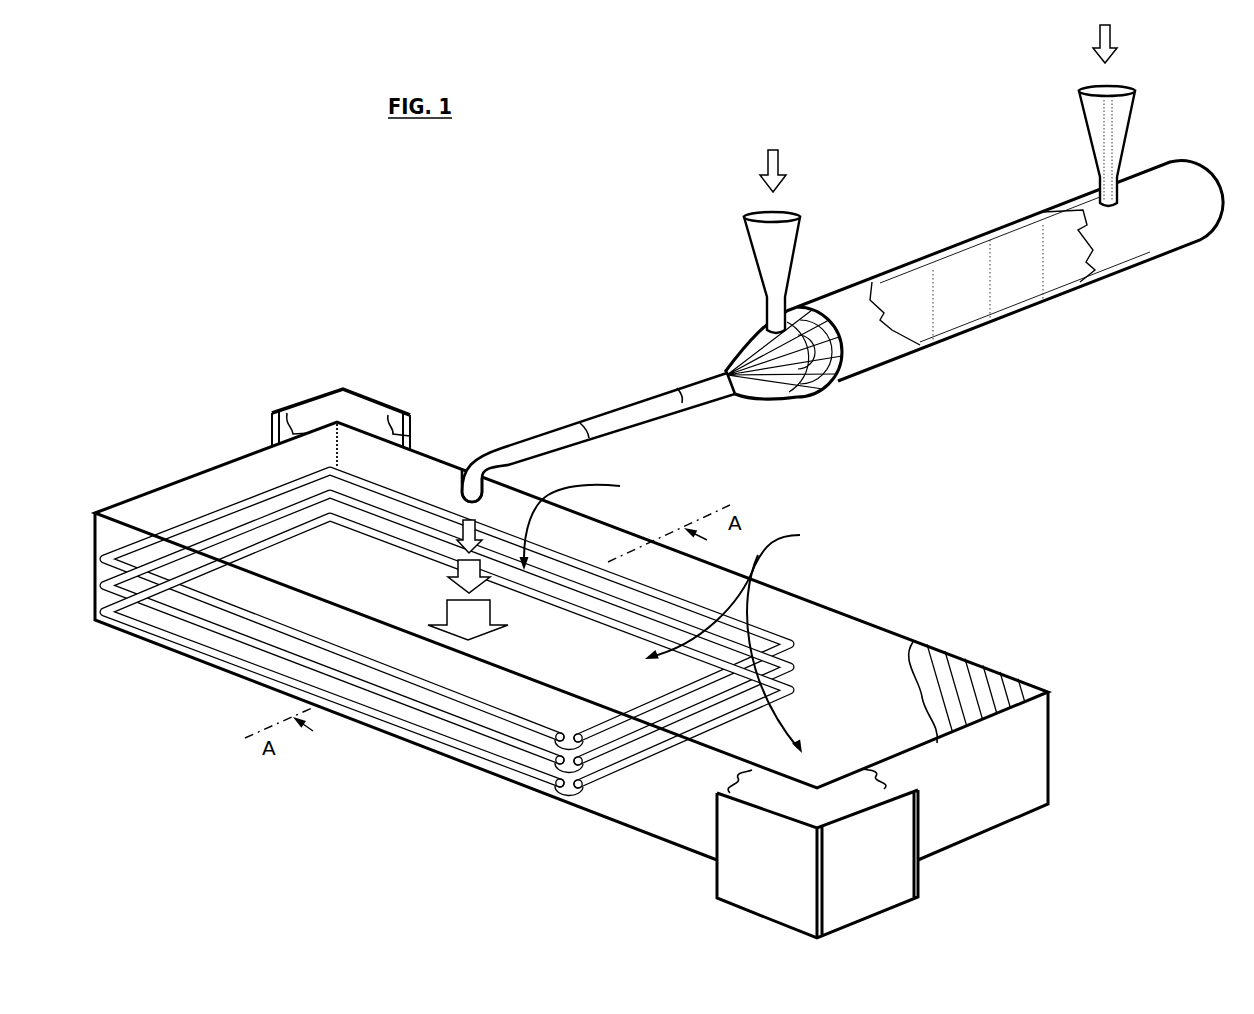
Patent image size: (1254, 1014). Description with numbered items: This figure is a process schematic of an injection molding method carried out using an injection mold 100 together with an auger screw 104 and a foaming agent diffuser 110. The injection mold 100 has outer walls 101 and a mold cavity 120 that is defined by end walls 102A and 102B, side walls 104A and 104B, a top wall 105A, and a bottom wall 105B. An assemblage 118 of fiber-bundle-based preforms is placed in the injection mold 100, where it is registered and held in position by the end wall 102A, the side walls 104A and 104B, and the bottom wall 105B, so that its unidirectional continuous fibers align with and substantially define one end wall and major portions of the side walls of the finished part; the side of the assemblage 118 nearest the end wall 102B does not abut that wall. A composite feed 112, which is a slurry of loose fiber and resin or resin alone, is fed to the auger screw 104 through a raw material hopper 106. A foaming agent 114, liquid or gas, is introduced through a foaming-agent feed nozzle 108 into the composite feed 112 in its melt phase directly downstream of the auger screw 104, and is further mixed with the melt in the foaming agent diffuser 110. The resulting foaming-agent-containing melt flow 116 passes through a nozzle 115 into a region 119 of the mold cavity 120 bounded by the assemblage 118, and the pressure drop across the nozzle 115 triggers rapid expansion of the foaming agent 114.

The injection mold 100 is at (227, 312).
The walls 101 is at (330, 388).
The end wall 102A is at (208, 485).
The end wall 102B is at (957, 806).
The auger screw 104 is at (1067, 272).
The side wall 104A is at (283, 605).
The side wall 104B is at (805, 601).
The top wall 105A is at (972, 694).
The bottom wall 105B is at (668, 795).
The raw material hopper 106 is at (1116, 137).
The foaming-agent feed nozzle 108 is at (768, 245).
The foaming agent diffuser 110 is at (612, 418).
The composite feed 112 is at (1102, 36).
The foaming agent 114 is at (765, 159).
The nozzle 115 is at (458, 493).
The foaming-agent-containing melt flow 116 is at (436, 591).
The assemblage of fiber-bundle-based preforms 118 is at (800, 677).
The region 119 is at (589, 524).
The mold cavity 120 is at (741, 640).